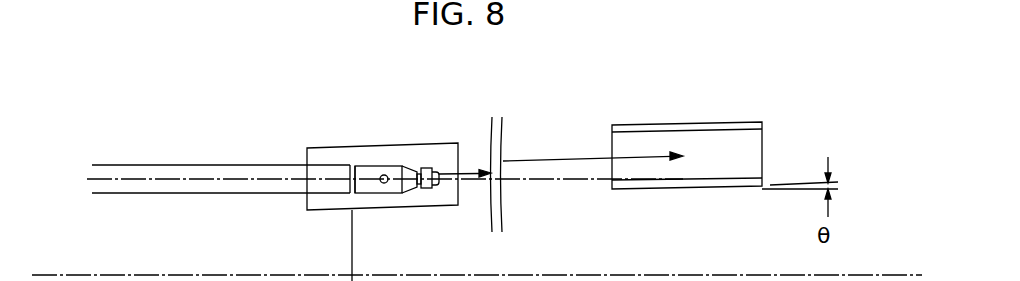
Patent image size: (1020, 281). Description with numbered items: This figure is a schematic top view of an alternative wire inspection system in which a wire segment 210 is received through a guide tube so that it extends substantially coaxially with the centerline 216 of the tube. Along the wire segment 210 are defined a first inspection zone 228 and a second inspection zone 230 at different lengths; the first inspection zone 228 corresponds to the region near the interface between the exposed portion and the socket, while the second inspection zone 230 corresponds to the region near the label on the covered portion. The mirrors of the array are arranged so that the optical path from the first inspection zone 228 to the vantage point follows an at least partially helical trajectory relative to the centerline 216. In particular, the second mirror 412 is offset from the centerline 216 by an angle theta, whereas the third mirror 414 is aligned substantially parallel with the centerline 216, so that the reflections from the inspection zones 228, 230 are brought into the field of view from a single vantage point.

The wire segment 210 is at (222, 195).
The centerline 216 is at (293, 178).
The first inspection zone 228 is at (381, 151).
The second inspection zone 230 is at (165, 125).
The second mirror 412 is at (745, 122).
The third mirror 414 is at (750, 143).